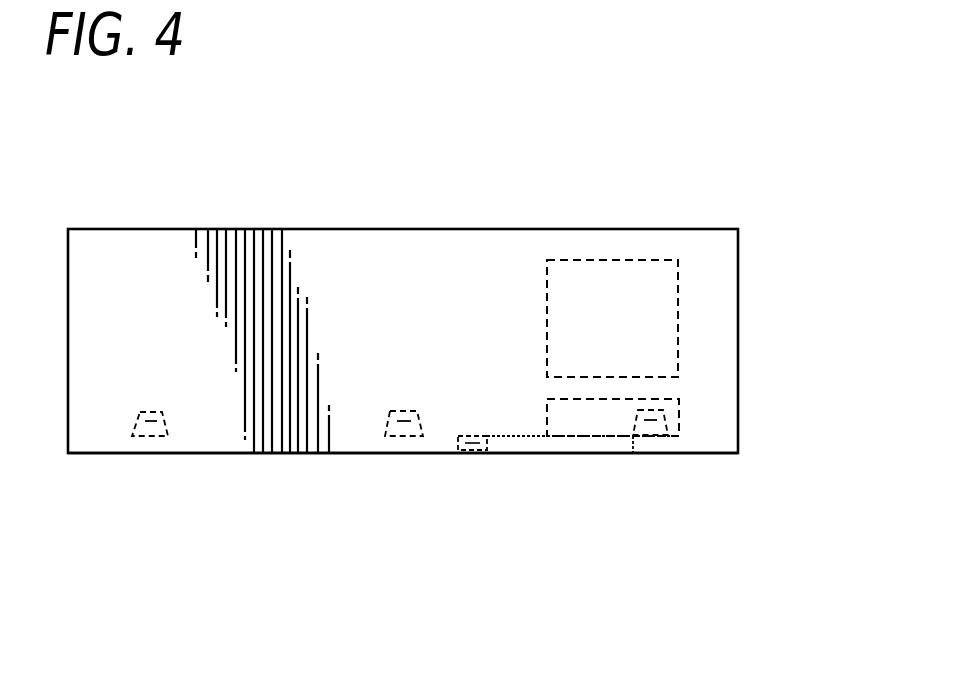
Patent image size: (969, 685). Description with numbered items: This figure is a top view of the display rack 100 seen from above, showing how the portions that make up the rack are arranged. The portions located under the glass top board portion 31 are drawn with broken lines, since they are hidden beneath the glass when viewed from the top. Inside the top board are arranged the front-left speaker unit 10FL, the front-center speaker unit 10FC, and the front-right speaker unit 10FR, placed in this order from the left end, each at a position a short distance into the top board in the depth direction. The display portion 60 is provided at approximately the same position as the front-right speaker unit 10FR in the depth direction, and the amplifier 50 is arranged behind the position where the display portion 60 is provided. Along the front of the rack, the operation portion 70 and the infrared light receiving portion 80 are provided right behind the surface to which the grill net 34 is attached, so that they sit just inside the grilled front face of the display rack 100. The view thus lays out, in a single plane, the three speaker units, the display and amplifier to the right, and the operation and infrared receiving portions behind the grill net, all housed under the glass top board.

The display rack 100 is at (99, 140).
The glass top board portion 31 is at (167, 228).
The grill net 34 is at (118, 455).
The front-left speaker unit 10FL is at (148, 410).
The front-center speaker unit 10FC is at (400, 410).
The front-right speaker unit 10FR is at (645, 410).
The amplifier 50 is at (611, 258).
The display portion 60 is at (681, 418).
The operation portion 70 is at (590, 455).
The infrared light receiving portion 80 is at (470, 452).